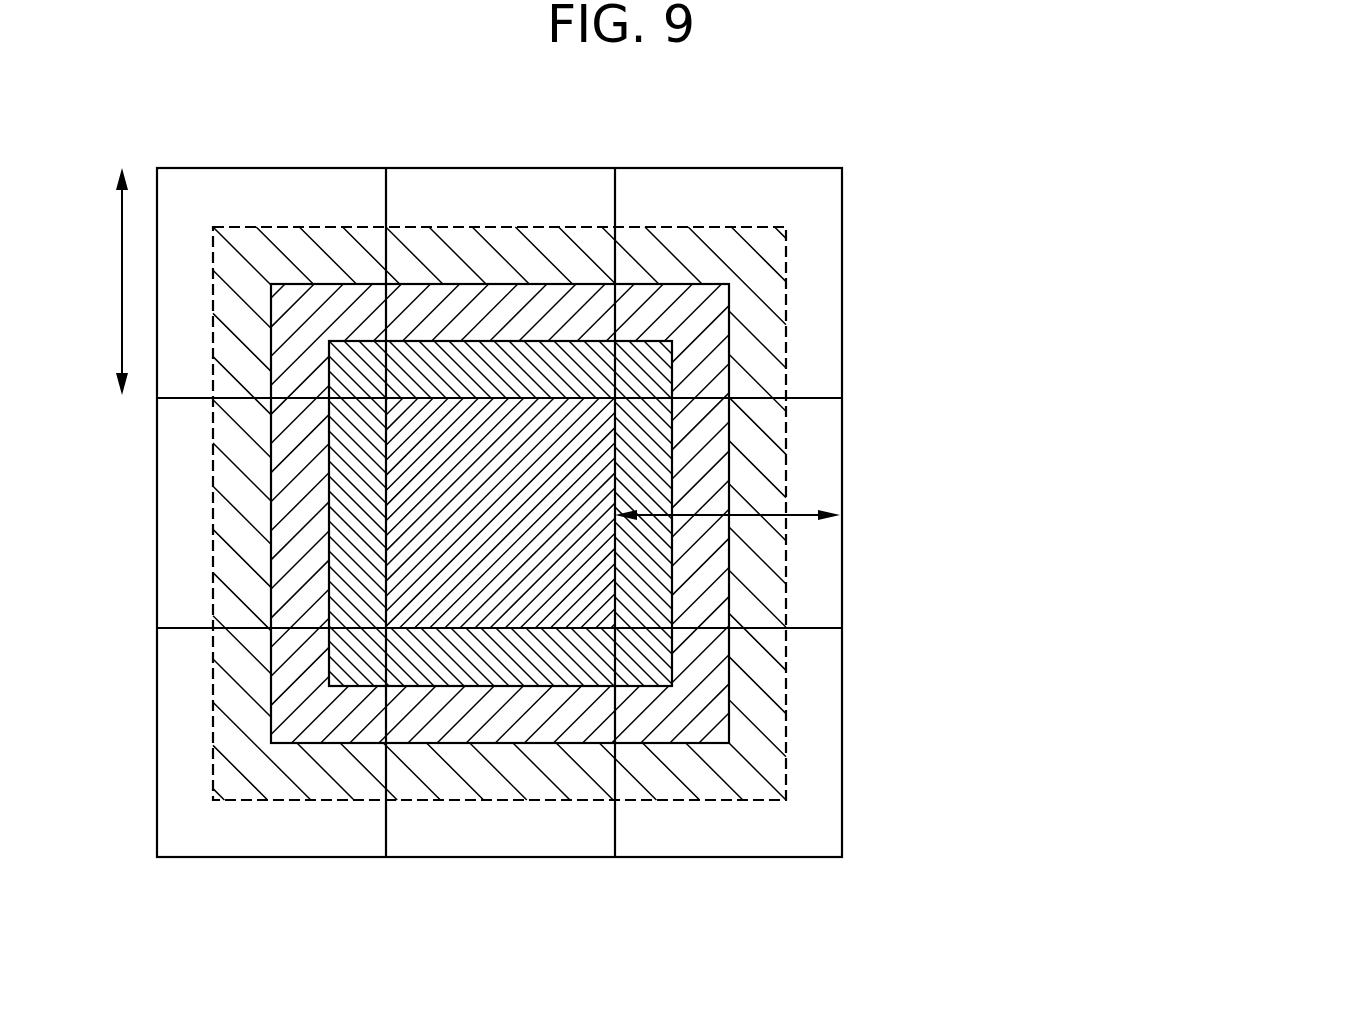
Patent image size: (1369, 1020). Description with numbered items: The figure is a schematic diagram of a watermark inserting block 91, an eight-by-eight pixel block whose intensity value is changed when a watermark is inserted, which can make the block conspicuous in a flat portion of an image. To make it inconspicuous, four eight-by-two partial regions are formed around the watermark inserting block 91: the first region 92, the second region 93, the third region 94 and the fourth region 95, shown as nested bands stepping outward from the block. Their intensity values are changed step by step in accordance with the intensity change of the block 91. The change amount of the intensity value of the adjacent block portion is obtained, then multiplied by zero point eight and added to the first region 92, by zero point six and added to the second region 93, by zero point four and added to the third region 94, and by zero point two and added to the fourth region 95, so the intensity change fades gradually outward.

The watermark inserting block 91 is at (492, 416).
The A1 region 92 is at (642, 447).
The A2 region 93 is at (697, 487).
The A3 region 94 is at (753, 543).
The A4 region 95 is at (812, 583).